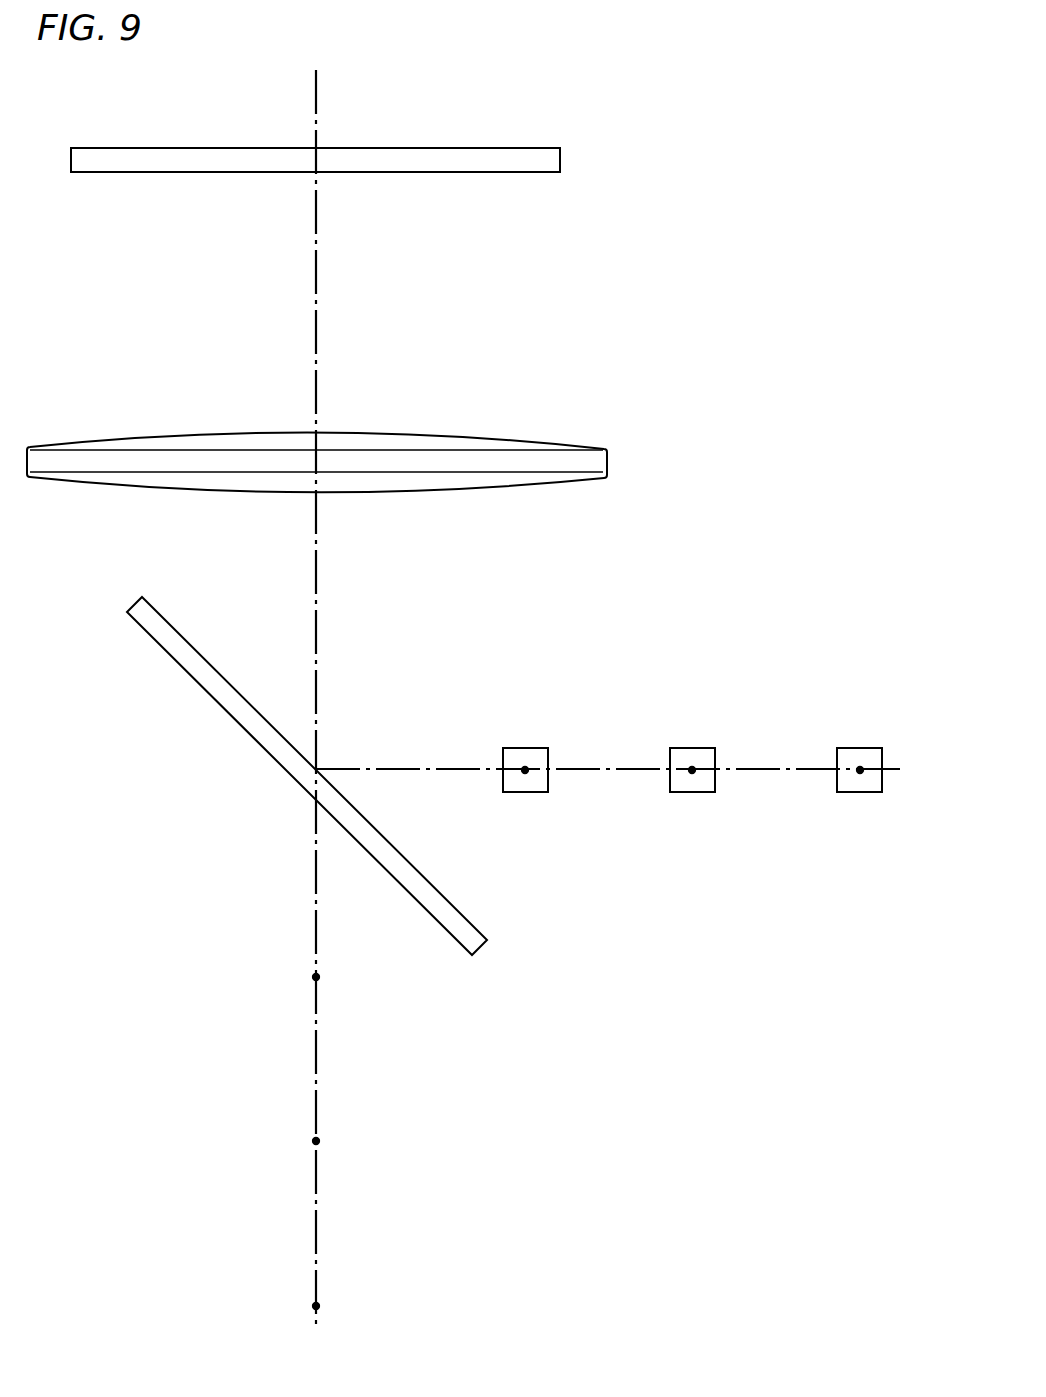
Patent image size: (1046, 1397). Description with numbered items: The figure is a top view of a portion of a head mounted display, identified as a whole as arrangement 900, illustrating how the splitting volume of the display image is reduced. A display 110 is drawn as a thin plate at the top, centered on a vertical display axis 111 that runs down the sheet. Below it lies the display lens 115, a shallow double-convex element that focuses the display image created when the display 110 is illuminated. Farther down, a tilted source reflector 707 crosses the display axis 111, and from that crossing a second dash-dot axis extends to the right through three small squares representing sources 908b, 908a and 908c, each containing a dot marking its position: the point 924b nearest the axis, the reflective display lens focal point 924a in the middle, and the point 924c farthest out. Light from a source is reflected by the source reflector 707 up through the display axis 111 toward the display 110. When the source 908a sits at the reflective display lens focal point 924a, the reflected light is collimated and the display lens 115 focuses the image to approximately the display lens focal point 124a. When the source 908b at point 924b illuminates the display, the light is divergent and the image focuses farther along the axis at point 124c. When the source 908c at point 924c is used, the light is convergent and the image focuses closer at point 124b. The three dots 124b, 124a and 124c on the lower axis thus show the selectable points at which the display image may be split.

The optical system 900 is at (465, 698).
The display axis 111 is at (577, 694).
The display 110 is at (315, 135).
The display lens 115 is at (349, 462).
The source reflector 707 is at (325, 796).
The source 908a is at (706, 768).
The source 908b is at (549, 779).
The source 908c is at (866, 773).
The reflective display lens focal point 924a is at (716, 725).
The point 924b is at (557, 713).
The point 924c is at (872, 735).
The display lens focal point 124a is at (266, 1157).
The point 124b is at (249, 991).
The point 124c is at (355, 1324).